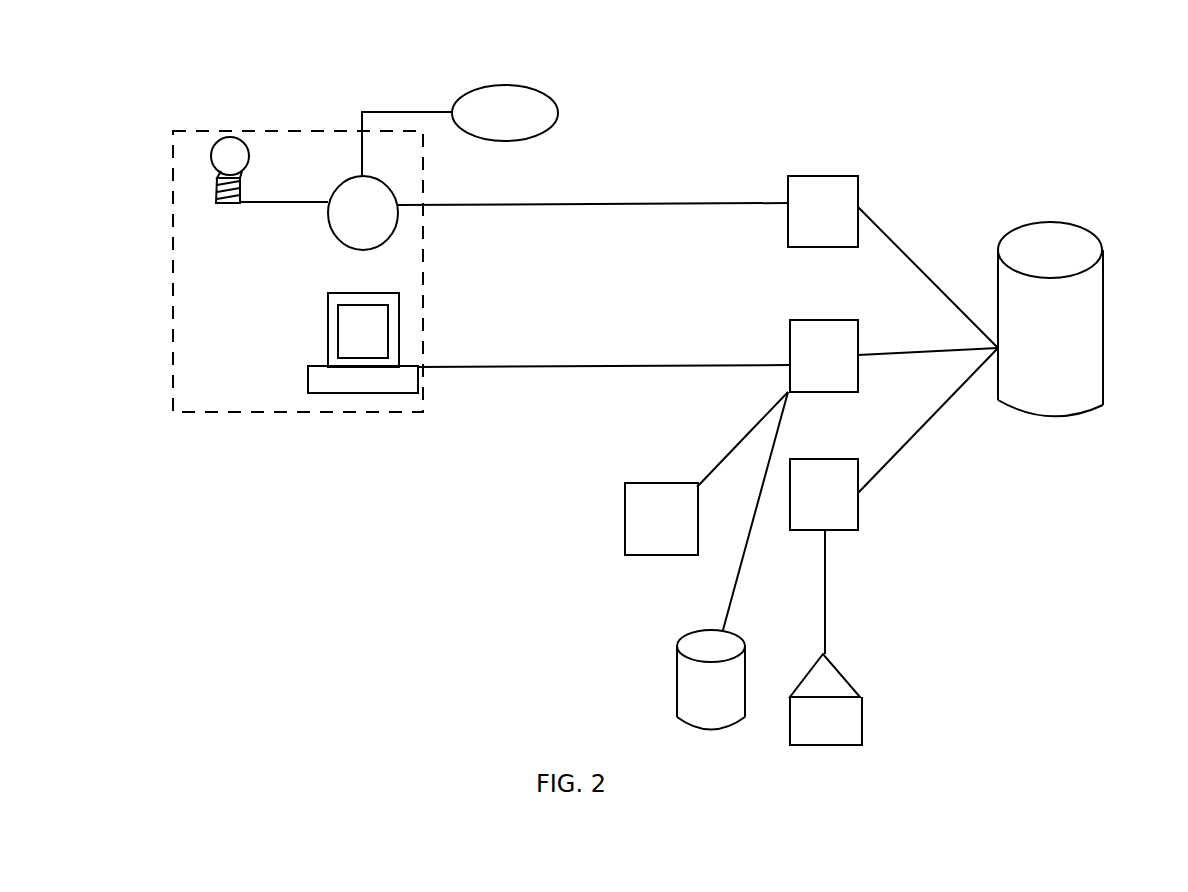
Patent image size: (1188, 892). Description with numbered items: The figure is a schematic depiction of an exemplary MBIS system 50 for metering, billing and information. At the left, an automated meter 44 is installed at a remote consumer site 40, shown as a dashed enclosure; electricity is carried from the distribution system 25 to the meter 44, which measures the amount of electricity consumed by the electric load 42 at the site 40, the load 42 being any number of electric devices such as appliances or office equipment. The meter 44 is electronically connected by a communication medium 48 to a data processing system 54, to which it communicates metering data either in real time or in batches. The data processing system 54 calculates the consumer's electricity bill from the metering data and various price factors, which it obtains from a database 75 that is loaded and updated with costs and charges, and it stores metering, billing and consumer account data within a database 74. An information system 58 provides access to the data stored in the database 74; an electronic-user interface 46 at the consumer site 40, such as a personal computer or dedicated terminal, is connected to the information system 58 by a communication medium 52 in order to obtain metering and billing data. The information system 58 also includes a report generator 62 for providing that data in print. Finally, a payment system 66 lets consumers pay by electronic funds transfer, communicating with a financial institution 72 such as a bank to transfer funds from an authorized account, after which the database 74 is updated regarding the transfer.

The distribution system 25 is at (552, 97).
The remote consumer site 40 is at (423, 405).
The electric load 42 is at (248, 143).
The automated meter 44 is at (400, 227).
The electronic-user interface 46 is at (400, 320).
The communication medium 48 is at (603, 203).
The MBIS system 50 is at (989, 142).
The communication medium 52 is at (583, 365).
The data processing system 54 is at (860, 175).
The information system 58 is at (860, 320).
The report generator 62 is at (628, 484).
The payment system 66 is at (857, 458).
The financial institution 72 is at (862, 697).
The database 74 is at (1108, 272).
The database 75 is at (678, 650).